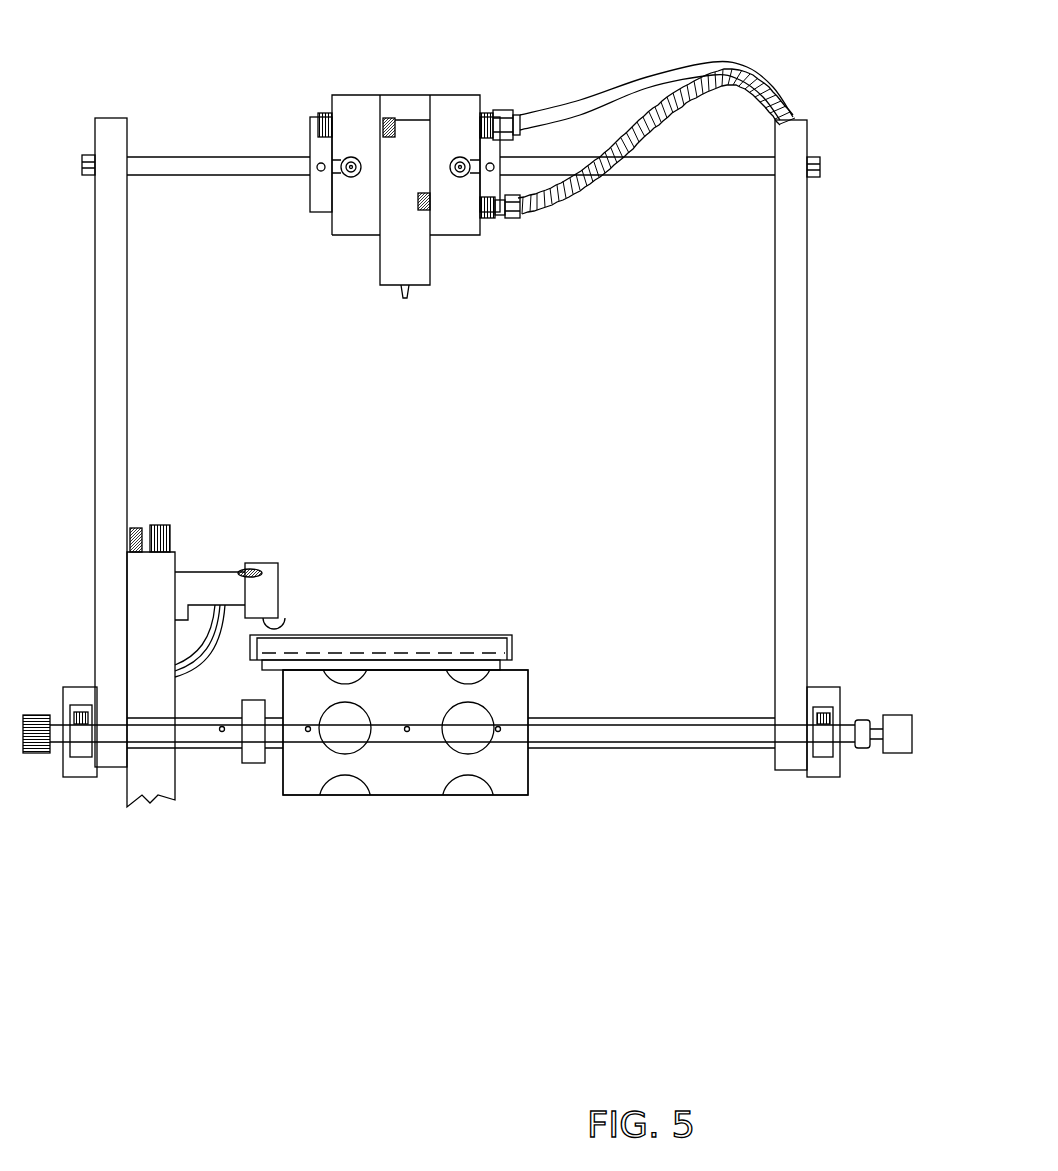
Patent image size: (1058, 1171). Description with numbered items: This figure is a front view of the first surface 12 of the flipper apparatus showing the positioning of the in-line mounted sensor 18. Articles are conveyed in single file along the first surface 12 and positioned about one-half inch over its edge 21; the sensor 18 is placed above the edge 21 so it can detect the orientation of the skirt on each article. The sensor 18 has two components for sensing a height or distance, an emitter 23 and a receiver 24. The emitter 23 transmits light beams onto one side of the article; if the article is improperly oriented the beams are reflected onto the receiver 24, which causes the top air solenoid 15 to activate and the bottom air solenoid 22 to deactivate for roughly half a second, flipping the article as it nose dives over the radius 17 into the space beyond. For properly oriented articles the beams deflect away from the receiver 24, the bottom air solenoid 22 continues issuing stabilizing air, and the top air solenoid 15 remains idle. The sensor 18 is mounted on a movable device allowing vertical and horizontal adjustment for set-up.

The first surface 12 is at (421, 786).
The air solenoid 15 is at (410, 298).
The radius 17 is at (512, 693).
The sensor 18 is at (278, 583).
The edge 21 is at (283, 688).
The bottom air solenoid 22 is at (498, 730).
The emitter 23 is at (270, 625).
The receiver 24 is at (243, 622).